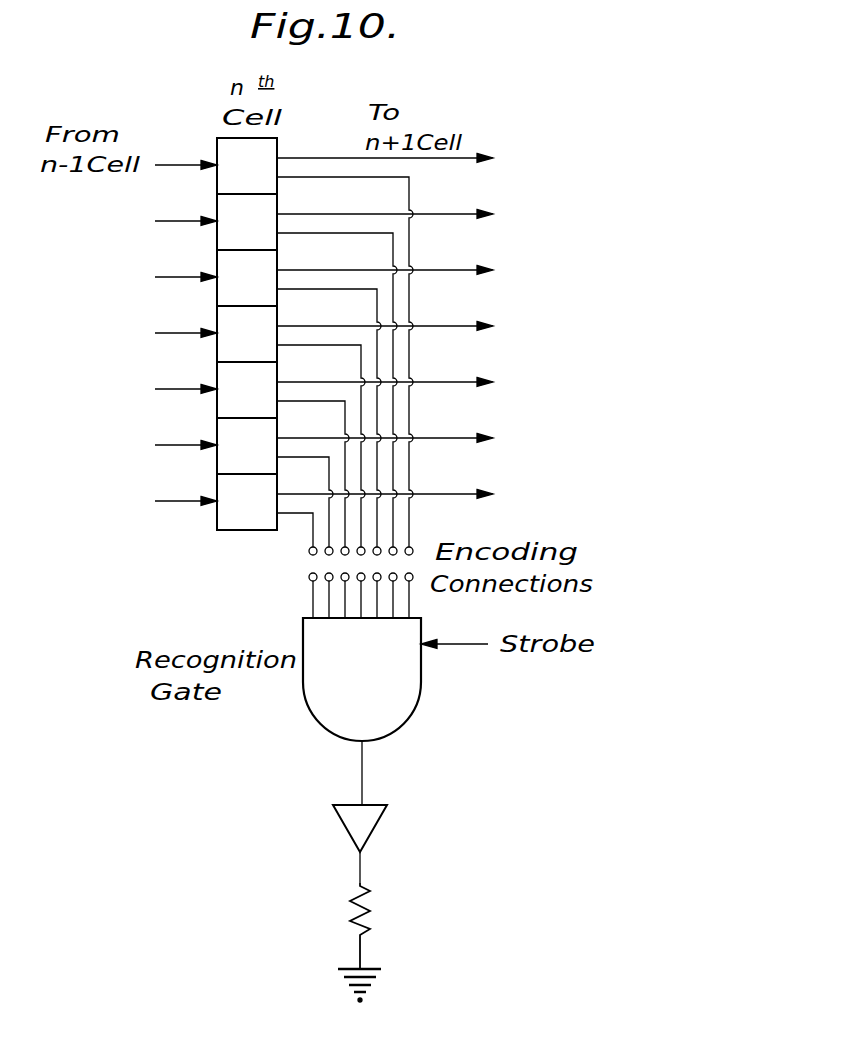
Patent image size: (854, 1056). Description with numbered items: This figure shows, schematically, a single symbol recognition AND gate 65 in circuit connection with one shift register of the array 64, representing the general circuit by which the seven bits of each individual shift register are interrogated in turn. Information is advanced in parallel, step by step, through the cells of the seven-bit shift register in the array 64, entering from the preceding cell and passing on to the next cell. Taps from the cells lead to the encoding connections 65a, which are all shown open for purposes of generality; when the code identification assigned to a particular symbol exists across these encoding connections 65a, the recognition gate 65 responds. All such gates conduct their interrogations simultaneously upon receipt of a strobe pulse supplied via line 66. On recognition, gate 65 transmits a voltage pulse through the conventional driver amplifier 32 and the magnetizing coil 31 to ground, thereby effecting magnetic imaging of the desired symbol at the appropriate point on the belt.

The shift register array 64 is at (198, 549).
The encoding connections 65a is at (309, 565).
The symbol recognition AND gate 65 is at (397, 713).
The strobe line 66 is at (462, 645).
The driver amplifier 32 is at (375, 820).
The magnetizing coil 31 is at (362, 912).